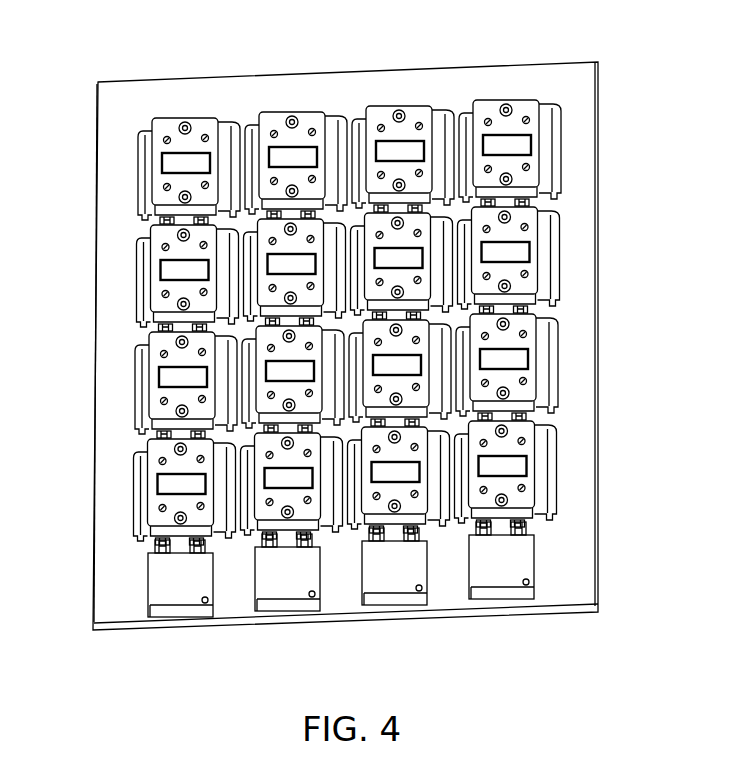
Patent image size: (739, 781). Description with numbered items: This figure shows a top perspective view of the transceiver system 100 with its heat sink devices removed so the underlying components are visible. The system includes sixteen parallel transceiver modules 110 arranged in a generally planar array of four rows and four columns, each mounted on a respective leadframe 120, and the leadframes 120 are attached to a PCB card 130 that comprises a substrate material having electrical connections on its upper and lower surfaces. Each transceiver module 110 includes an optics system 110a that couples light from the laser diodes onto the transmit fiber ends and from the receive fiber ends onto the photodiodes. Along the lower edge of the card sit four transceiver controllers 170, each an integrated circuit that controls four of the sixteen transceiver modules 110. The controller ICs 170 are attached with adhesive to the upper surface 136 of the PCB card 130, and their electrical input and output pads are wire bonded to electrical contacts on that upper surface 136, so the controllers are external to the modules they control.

The transceiver system 100 is at (557, 45).
The transceiver module 110 is at (155, 448).
The optics system 110a is at (176, 382).
The leadframe 120 is at (142, 283).
The PCB card 130 is at (598, 395).
The upper surface 136 is at (117, 119).
The transceiver controller 170 is at (177, 592).